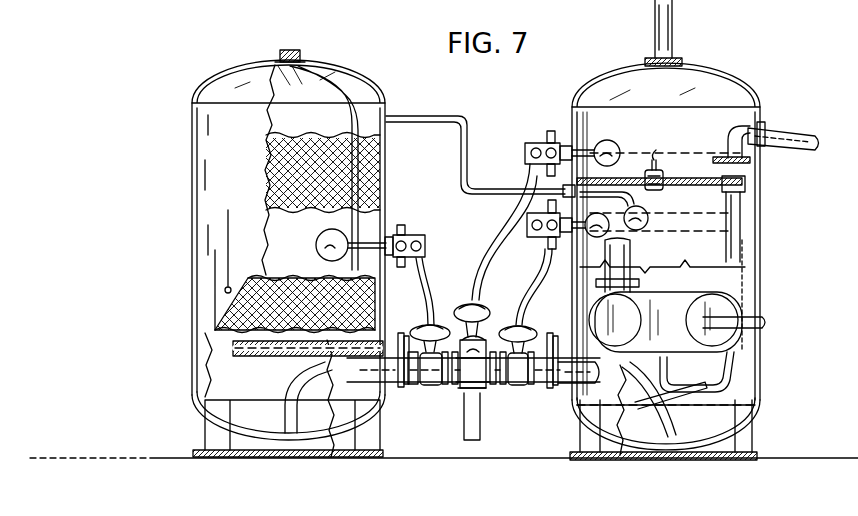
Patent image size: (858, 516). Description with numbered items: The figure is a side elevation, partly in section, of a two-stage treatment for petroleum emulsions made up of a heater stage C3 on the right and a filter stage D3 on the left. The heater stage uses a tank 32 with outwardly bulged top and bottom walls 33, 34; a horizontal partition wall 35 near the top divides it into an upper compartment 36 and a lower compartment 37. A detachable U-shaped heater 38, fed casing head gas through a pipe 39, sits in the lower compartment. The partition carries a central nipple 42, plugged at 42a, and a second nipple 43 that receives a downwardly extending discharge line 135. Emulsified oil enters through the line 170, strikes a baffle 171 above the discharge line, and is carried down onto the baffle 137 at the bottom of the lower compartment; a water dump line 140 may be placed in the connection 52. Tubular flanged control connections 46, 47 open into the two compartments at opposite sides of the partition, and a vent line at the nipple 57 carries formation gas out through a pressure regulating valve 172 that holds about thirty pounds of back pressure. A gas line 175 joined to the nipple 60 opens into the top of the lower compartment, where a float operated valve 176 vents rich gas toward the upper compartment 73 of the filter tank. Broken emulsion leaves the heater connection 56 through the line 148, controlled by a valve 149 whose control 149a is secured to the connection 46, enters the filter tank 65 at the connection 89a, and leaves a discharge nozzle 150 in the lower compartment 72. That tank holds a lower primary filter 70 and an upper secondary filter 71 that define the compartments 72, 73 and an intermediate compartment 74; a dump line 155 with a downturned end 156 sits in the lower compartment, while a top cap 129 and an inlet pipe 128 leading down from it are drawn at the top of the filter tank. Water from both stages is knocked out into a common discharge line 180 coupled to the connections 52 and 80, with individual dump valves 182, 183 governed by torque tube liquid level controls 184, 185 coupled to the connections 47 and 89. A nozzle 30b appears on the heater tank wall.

The nozzle on tank 30b is at (765, 125).
The tank 32 is at (760, 250).
The top wall 33 is at (710, 70).
The bottom wall 34 is at (705, 450).
The horizontal partition wall 35 is at (684, 186).
The upper compartment 36 is at (730, 86).
The lower compartment 37 is at (760, 196).
The U-shaped heater 38 is at (680, 305).
The pipe 39 is at (768, 322).
The central nipple 42 is at (665, 180).
The plug 42a is at (655, 154).
The second screw threaded nipple 43 is at (726, 167).
The tubular flanged control connection 46 is at (553, 130).
The tubular flanged control connection 47 is at (567, 223).
The outlet connection 52 is at (572, 385).
The connection 56 is at (552, 335).
The nipple 57 is at (648, 60).
The nipple 60 is at (562, 189).
The tank 65 is at (192, 272).
The lower primary filter 70 is at (248, 313).
The upper secondary filter 71 is at (266, 162).
The lower compartment 72 is at (253, 415).
The upper compartment 73 is at (296, 115).
The intermediate compartment 74 is at (315, 241).
The connection 80 is at (404, 396).
The connection 89 is at (401, 226).
The connection 89a is at (412, 330).
The inlet pipe 128 is at (348, 120).
The tank cap 129 is at (310, 84).
The discharge line 135 is at (745, 228).
The baffle 137 is at (705, 387).
The water dump line 140 is at (670, 415).
The line 148 is at (575, 260).
The valve 149 is at (468, 306).
The control 149a is at (526, 150).
The discharge nozzle 150 is at (288, 358).
The dump line 155 is at (412, 378).
The downturned end 156 is at (308, 392).
The line 170 is at (812, 134).
The baffle 171 is at (673, 25).
The pressure regulating valve 172 is at (712, 4).
The gas line 175 is at (475, 158).
The float operated valve 176 is at (645, 212).
The common discharge line 180 is at (482, 436).
The dump valve 182 is at (520, 386).
The dump valve 183 is at (430, 386).
The torque tube liquid level control 184 is at (528, 248).
The torque tube liquid level control 185 is at (426, 247).
The heater stage C3 is at (772, 84).
The filter stage D3 is at (380, 92).